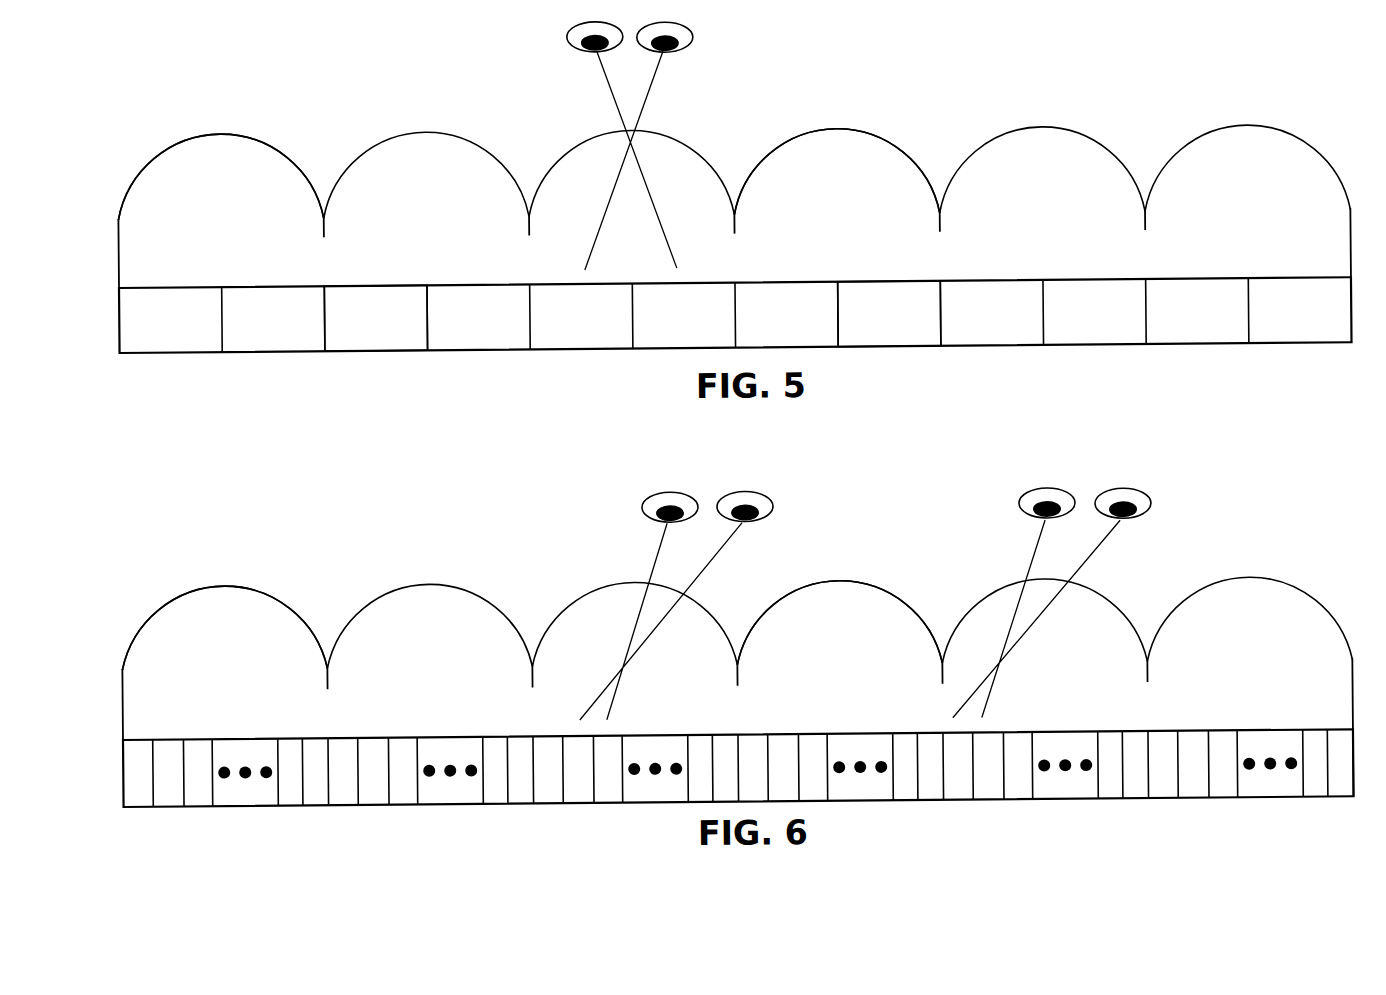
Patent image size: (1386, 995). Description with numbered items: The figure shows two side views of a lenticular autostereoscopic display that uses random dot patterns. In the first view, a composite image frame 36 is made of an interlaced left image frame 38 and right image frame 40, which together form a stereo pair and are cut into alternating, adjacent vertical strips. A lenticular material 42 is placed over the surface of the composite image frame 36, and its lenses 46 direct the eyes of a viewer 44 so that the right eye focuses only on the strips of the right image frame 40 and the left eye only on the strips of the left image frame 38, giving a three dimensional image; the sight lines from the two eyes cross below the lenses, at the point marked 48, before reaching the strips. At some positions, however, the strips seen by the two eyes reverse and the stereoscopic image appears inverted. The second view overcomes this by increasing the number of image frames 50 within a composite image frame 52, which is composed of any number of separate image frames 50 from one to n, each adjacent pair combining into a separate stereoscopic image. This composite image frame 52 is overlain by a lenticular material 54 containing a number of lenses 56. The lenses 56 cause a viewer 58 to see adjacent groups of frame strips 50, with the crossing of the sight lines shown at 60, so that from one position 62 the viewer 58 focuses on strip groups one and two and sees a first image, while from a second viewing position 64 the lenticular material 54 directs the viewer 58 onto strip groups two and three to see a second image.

In FIG. 5, the composite image frame 36 is at (224, 386).
In FIG. 5, the left image frame 38 is at (399, 343).
In FIG. 5, the right image frame 40 is at (917, 344).
In FIG. 5, the lenticular material 42 is at (1262, 178).
In FIG. 5, the viewer 44 is at (697, 42).
In FIG. 5, the lenses 46 is at (223, 136).
In FIG. 5, the crossover point of sight lines 48 is at (633, 187).
In FIG. 6, the image frames 50 is at (293, 798).
In FIG. 6, the composite image frame 52 is at (1224, 830).
In FIG. 6, the lenticular material 54 is at (1257, 628).
In FIG. 6, the lenses 56 is at (431, 587).
In FIG. 6, the viewer 58 is at (645, 512).
In FIG. 6, the crossover point of sight lines 60 is at (617, 683).
In FIG. 6, the position 62 is at (1067, 476).
In FIG. 6, the second viewing position 64 is at (737, 475).